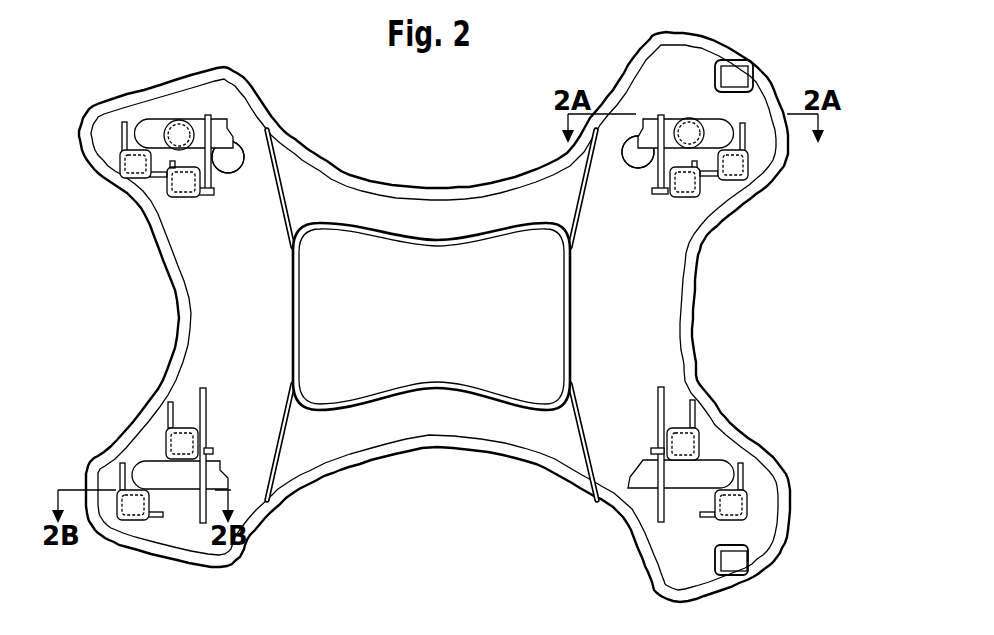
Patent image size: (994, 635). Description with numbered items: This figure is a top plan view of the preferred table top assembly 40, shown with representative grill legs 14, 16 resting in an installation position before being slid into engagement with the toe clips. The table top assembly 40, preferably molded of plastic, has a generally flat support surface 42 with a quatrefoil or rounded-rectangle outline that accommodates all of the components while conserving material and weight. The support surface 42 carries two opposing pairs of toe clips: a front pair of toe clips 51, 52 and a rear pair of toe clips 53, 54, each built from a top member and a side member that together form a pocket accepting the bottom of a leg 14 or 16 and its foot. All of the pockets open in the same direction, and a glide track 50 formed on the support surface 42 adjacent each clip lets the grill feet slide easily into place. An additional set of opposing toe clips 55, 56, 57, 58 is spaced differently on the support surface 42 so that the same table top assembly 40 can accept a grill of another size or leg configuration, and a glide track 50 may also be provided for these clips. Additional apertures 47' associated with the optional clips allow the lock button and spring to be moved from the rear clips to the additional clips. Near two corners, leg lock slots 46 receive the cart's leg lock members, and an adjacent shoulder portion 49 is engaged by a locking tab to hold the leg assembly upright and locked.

The leg 14 is at (712, 122).
The leg 16 is at (217, 128).
The table top assembly 40 is at (122, 314).
The support surface 42 is at (683, 327).
The leg lock slot 46 is at (743, 72).
The additional aperture 47' is at (433, 103).
The shoulder portion 49 is at (718, 62).
The glide track 50 is at (213, 182).
The toe clip 51 is at (123, 503).
The toe clip 52 is at (733, 518).
The toe clip 53 is at (122, 163).
The toe clip 54 is at (745, 168).
The additional toe clip 55 is at (170, 437).
The additional toe clip 56 is at (700, 438).
The additional toe clip 57 is at (163, 185).
The additional toe clip 58 is at (686, 192).